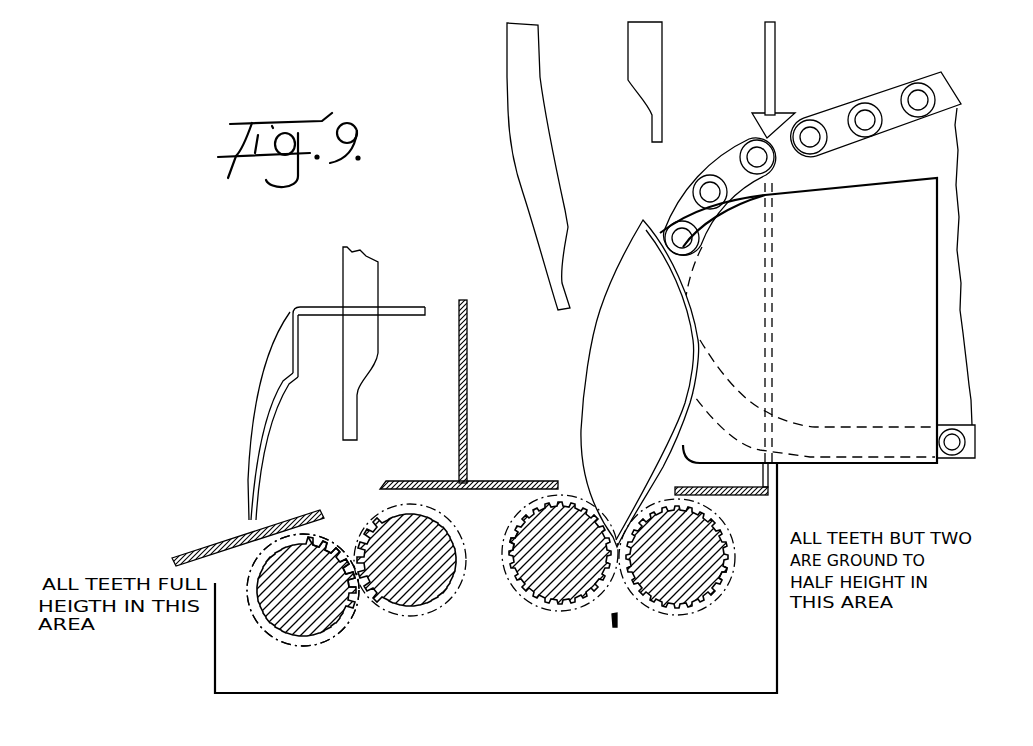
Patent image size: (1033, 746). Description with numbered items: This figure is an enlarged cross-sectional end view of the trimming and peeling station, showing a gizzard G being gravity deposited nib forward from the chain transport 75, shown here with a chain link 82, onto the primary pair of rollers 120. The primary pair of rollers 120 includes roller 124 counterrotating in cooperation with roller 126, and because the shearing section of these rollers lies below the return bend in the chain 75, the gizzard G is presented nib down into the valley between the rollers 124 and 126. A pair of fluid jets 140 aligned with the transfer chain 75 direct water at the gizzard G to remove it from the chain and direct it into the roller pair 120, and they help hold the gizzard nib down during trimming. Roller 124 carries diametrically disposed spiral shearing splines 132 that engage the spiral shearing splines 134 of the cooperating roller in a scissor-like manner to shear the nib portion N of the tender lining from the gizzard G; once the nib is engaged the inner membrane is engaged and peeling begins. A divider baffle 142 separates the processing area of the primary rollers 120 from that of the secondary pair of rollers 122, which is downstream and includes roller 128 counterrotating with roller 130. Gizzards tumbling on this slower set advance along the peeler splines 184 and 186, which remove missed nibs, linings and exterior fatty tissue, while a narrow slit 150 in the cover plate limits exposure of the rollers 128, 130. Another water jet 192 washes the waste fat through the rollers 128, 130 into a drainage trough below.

The chain transport 75 is at (860, 133).
The chain link 82 is at (755, 113).
The primary pair of rollers 120 is at (656, 629).
The secondary pair of rollers 122 is at (353, 658).
The roller 124 is at (693, 588).
The roller 126 is at (547, 602).
The roller 128 is at (437, 588).
The roller 130 is at (282, 613).
The spiral shearing splines 132 is at (740, 555).
The spiral shearing splines 134 is at (512, 552).
The fluid jets 140 is at (627, 142).
The divider baffle 142 is at (470, 411).
The slit 150 is at (305, 517).
The peeler splines 184 is at (332, 538).
The peeler splines 186 is at (358, 597).
The water jet 192 is at (357, 423).
The gizzard G is at (640, 423).
The nib portion N is at (611, 628).